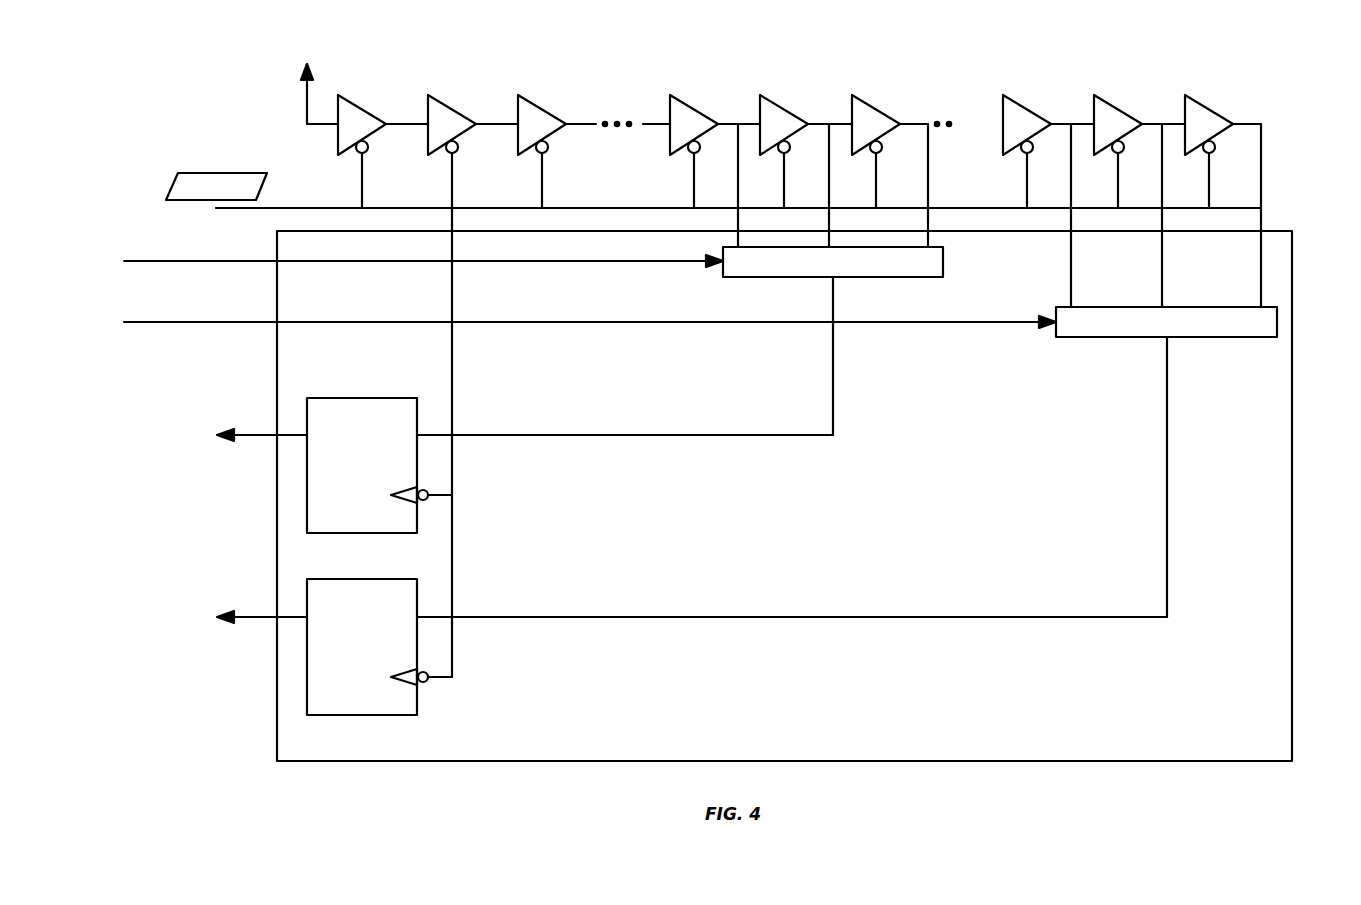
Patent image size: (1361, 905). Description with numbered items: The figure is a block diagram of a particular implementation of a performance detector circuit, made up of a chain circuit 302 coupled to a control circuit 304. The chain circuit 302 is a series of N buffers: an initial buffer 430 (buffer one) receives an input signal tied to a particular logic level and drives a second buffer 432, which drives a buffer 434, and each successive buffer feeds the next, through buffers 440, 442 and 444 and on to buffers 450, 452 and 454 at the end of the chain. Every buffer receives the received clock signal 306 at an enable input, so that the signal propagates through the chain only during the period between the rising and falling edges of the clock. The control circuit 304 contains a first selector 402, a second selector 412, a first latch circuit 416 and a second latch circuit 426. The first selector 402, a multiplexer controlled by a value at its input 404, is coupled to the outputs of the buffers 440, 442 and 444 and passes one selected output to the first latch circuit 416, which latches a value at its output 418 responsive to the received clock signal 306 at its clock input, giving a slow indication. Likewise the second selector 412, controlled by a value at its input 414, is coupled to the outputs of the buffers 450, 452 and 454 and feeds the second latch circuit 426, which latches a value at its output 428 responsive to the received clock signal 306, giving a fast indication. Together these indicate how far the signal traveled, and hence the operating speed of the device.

The chain circuit 302 is at (1263, 123).
The control circuit 304 is at (277, 698).
The received clock signal 306 is at (226, 172).
The first selector 402 is at (777, 278).
The input 404 is at (671, 261).
The second selector 412 is at (1110, 338).
The input 414 is at (1005, 323).
The first latch circuit 416 is at (360, 398).
The output 418 is at (250, 436).
The second latch circuit 426 is at (368, 715).
The output 428 is at (246, 618).
The initial buffer 430 is at (368, 112).
The second buffer 432 is at (458, 112).
The buffer 434 is at (548, 112).
The buffer 440 is at (700, 112).
The buffer 442 is at (790, 112).
The buffer 444 is at (882, 112).
The buffer 450 is at (1033, 112).
The buffer 452 is at (1124, 112).
The buffer 454 is at (1222, 112).